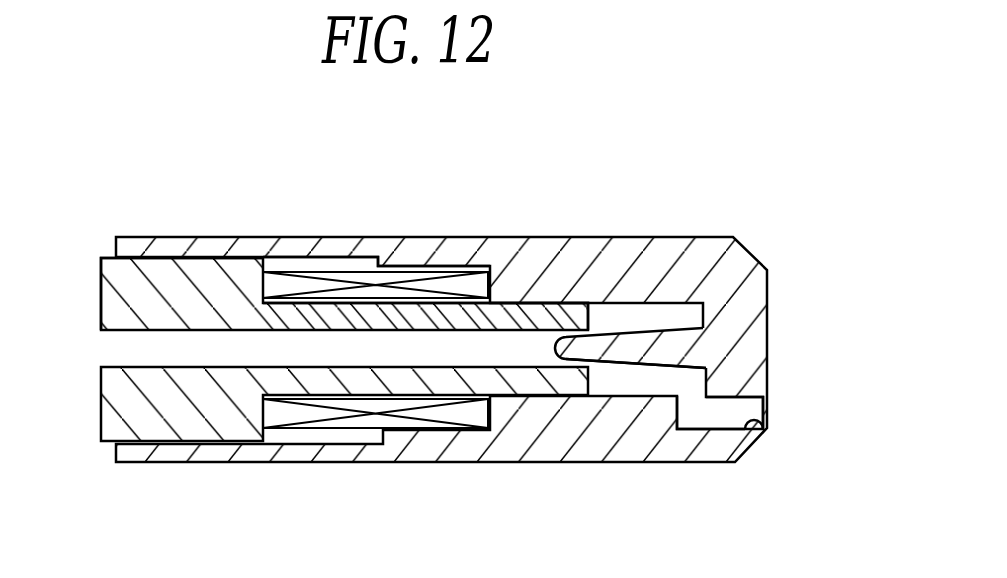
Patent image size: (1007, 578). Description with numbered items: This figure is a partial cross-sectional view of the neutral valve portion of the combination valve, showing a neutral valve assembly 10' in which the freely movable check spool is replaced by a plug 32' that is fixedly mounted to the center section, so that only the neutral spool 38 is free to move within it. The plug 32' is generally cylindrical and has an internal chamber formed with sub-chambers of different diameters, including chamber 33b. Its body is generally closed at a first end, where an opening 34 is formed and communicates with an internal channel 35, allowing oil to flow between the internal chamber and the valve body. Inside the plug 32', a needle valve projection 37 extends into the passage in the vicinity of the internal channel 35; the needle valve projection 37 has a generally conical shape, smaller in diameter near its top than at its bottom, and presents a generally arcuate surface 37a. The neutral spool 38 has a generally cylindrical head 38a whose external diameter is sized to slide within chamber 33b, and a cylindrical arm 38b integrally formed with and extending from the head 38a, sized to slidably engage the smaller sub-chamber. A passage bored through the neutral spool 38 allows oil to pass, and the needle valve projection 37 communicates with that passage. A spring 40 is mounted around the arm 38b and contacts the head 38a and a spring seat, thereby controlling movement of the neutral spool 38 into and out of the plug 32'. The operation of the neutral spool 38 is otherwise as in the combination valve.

The neutral valve assembly 10' is at (447, 295).
The plug 32' is at (441, 387).
The chamber 33b is at (293, 262).
The opening 34 is at (767, 422).
The internal channel 35 is at (720, 462).
The needle valve projection 37 is at (618, 343).
The arcuate surface 37a is at (598, 365).
The neutral spool 38 is at (102, 422).
The head 38a is at (105, 258).
The arm 38b is at (428, 318).
The spring 40 is at (378, 278).